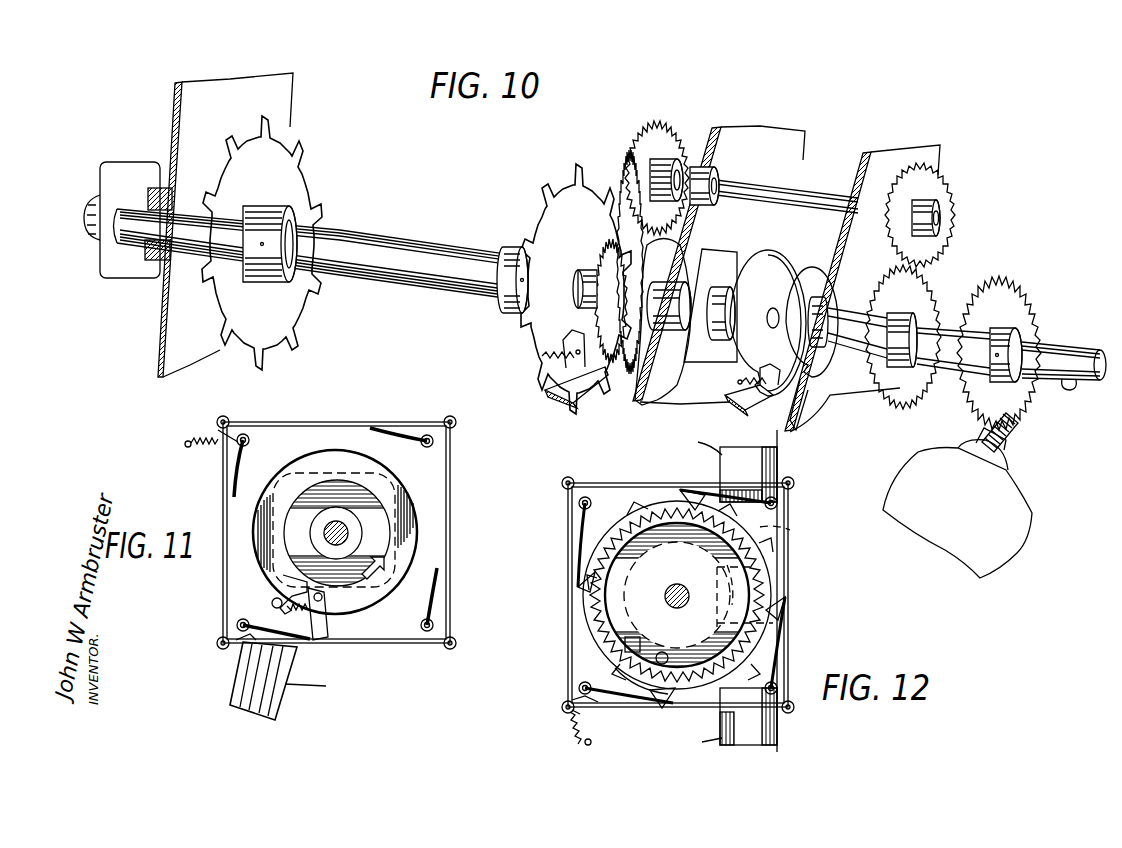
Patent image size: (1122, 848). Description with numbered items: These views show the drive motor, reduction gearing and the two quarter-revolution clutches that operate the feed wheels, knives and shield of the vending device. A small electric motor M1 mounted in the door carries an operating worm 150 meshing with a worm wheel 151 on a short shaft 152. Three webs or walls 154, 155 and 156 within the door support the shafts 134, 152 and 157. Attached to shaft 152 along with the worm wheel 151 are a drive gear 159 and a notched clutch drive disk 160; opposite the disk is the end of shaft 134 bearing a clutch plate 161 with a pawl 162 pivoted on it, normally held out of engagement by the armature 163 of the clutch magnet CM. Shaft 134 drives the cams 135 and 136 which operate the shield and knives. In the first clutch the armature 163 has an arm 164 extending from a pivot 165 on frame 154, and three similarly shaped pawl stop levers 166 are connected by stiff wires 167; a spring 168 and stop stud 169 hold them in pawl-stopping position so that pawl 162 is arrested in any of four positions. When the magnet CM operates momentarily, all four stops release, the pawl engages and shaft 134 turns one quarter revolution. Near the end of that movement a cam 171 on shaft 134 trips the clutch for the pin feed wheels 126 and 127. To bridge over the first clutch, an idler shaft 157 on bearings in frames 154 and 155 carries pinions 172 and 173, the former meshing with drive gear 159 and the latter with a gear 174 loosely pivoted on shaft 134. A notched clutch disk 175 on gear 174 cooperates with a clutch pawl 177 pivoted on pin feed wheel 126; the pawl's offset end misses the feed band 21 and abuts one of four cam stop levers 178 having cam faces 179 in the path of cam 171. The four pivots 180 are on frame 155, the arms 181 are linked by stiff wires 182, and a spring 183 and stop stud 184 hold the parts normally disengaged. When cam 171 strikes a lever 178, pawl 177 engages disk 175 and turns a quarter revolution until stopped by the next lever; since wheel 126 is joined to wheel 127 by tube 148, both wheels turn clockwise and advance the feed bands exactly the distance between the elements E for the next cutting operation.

In FIG. 12, the feed band 21 is at (778, 750).
In FIG. 10, the pin feed wheel 126 is at (566, 190).
In FIG. 12, the pin feed wheel 126 is at (778, 541).
In FIG. 10, the pin feed wheel 127 is at (290, 152).
In FIG. 10, the shaft 134 is at (135, 232).
In FIG. 11, the shaft 134 is at (336, 533).
In FIG. 12, the shaft 134 is at (672, 590).
In FIG. 10, the cam 135 is at (98, 258).
In FIG. 10, the cam 136 is at (712, 262).
In FIG. 11, the cam 136 is at (395, 552).
In FIG. 10, the tube 148 is at (418, 245).
In FIG. 10, the operating worm 150 is at (1017, 438).
In FIG. 10, the worm wheel 151 is at (1018, 292).
In FIG. 10, the shaft 152 is at (1057, 353).
In FIG. 11, the shaft 152 is at (347, 528).
In FIG. 10, the web or wall 154 is at (900, 155).
In FIG. 10, the web or wall 155 is at (766, 128).
In FIG. 10, the web or wall 156 is at (218, 80).
In FIG. 10, the idler shaft 157 is at (792, 190).
In FIG. 10, the drive gear 159 is at (917, 397).
In FIG. 10, the notched clutch drive disk 160 is at (822, 282).
In FIG. 11, the notched clutch drive disk 160 is at (380, 537).
In FIG. 10, the clutch plate 161 is at (790, 265).
In FIG. 11, the clutch plate 161 is at (393, 492).
In FIG. 10, the pawl 162 is at (812, 398).
In FIG. 11, the pawl 162 is at (326, 614).
In FIG. 10, the armature 163 is at (740, 402).
In FIG. 11, the armature 163 is at (274, 598).
In FIG. 11, the arm 164 is at (230, 630).
In FIG. 11, the pivot 165 is at (236, 620).
In FIG. 11, the pawl stop lever 166 is at (235, 472).
In FIG. 11, the stiff wire 167 is at (314, 424).
In FIG. 11, the spring 168 is at (200, 438).
In FIG. 11, the stop stud 169 is at (216, 440).
In FIG. 10, the cam 171 is at (635, 395).
In FIG. 12, the cam 171 is at (610, 540).
In FIG. 10, the pinion 172 is at (927, 184).
In FIG. 10, the pinion 173 is at (665, 128).
In FIG. 10, the gear 174 is at (630, 372).
In FIG. 12, the gear 174 is at (760, 556).
In FIG. 10, the notched clutch disk 175 is at (604, 252).
In FIG. 12, the notched clutch disk 175 is at (780, 527).
In FIG. 10, the clutch pawl 177 is at (563, 345).
In FIG. 12, the clutch pawl 177 is at (640, 690).
In FIG. 10, the cam stop lever 178 is at (565, 388).
In FIG. 12, the cam stop lever 178 is at (580, 525).
In FIG. 10, the cam face 179 is at (606, 380).
In FIG. 12, the cam face 179 is at (672, 704).
In FIG. 12, the pivot 180 is at (583, 685).
In FIG. 12, the arm 181 is at (576, 690).
In FIG. 12, the stiff wire 182 is at (622, 483).
In FIG. 12, the spring 183 is at (572, 722).
In FIG. 12, the stop stud 184 is at (580, 706).
In FIG. 12, the element E is at (731, 591).
In FIG. 10, the electric motor M1 is at (957, 503).
In FIG. 11, the clutch magnet CM is at (291, 681).